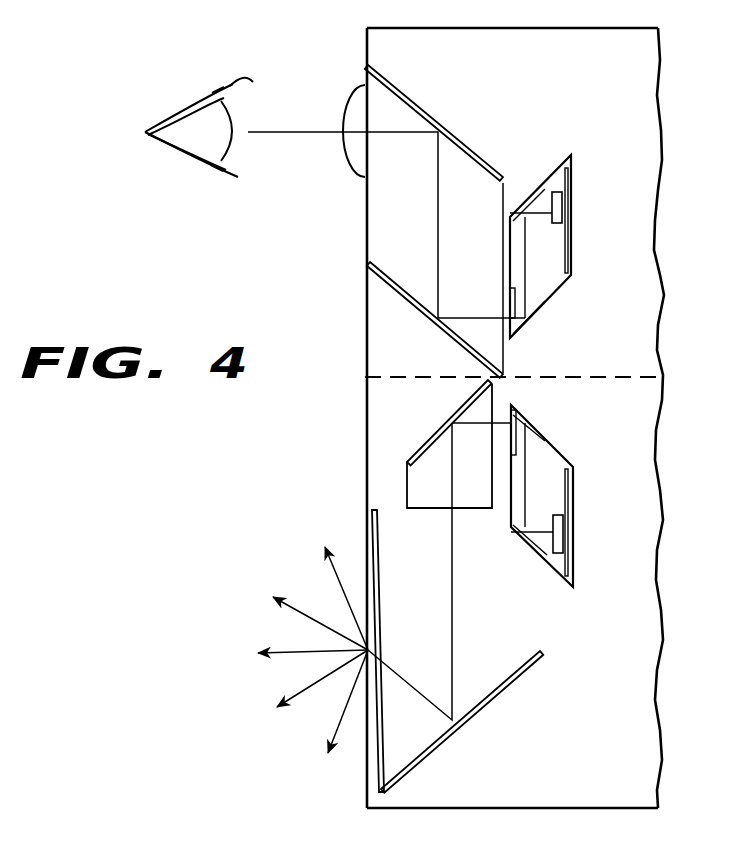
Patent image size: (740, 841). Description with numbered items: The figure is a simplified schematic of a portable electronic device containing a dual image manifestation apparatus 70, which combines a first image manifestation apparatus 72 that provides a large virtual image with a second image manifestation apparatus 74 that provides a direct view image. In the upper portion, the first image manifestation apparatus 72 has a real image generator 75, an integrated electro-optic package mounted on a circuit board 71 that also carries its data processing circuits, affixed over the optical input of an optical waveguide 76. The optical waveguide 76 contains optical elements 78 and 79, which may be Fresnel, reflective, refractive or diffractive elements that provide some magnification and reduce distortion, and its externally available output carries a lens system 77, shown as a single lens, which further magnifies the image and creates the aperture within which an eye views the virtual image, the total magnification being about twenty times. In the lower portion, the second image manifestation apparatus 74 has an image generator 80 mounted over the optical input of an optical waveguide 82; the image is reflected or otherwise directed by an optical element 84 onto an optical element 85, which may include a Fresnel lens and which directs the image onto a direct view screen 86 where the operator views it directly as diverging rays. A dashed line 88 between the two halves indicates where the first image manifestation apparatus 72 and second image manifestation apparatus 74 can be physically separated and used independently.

The dual image manifestation apparatus 70 is at (184, 427).
The circuit board 71 is at (571, 275).
The first image manifestation apparatus 72 is at (312, 237).
The second image manifestation apparatus 74 is at (252, 553).
The real image generator 75 is at (562, 215).
The optical waveguide 76 is at (504, 193).
The lens system 77 is at (342, 156).
The optical element 78 is at (433, 319).
The optical element 79 is at (436, 121).
The image generator 80 is at (549, 573).
The optical waveguide 82 is at (492, 508).
The optical element 84 is at (446, 420).
The optical element 85 is at (508, 688).
The direct view screen 86 is at (368, 528).
The line 88 is at (608, 377).